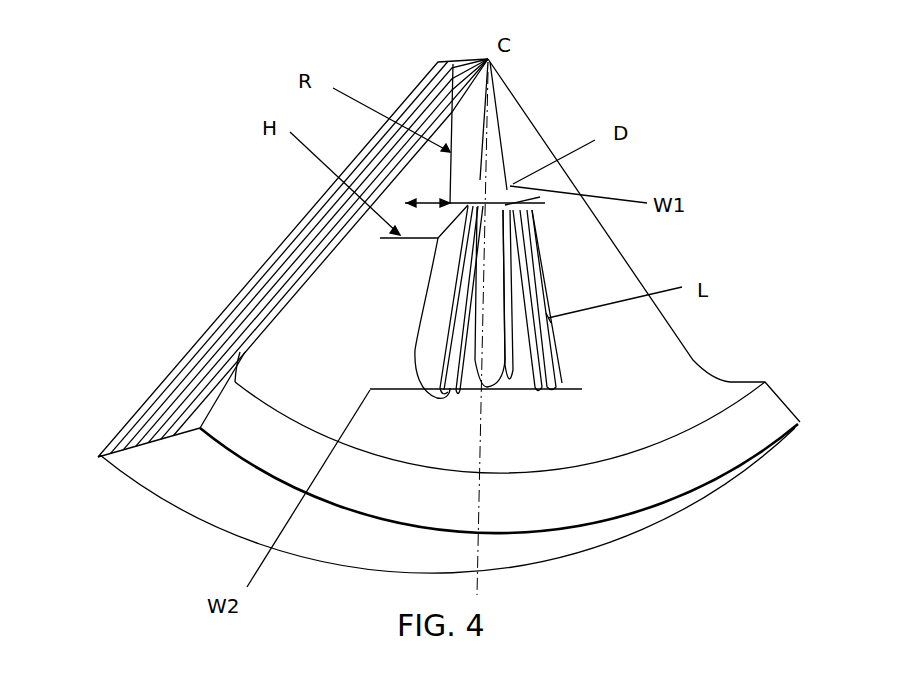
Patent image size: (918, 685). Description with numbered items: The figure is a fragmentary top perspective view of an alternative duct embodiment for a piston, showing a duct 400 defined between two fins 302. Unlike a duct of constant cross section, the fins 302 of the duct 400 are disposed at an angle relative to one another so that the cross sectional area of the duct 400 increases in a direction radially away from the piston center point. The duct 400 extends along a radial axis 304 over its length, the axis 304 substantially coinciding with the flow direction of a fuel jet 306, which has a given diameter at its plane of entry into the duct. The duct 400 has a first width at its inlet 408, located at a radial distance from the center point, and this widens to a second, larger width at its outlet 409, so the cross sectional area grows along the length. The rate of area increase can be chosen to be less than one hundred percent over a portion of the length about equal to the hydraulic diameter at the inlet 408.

The fins 302 is at (435, 325).
The radial axis 304 is at (483, 518).
The fuel jet 306 is at (500, 308).
The duct 400 is at (577, 357).
The inlet 408 is at (505, 200).
The outlet 409 is at (509, 397).